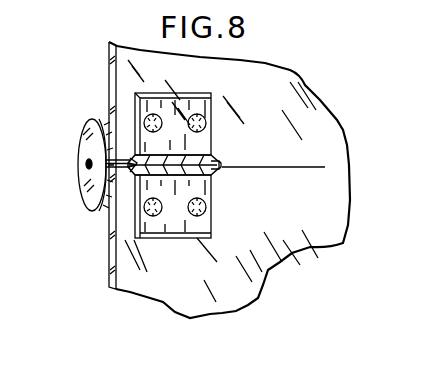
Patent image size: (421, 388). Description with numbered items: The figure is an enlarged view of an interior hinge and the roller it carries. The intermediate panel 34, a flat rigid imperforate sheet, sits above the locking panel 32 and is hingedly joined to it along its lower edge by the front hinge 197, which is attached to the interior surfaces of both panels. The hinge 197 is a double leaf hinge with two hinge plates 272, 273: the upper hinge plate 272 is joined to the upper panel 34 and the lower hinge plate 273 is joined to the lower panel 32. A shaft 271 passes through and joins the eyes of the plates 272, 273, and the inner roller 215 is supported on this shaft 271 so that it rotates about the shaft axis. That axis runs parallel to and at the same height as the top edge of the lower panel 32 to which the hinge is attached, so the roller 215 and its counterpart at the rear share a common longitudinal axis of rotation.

The intermediate panel 34 is at (338, 155).
The locking panel 32 is at (338, 220).
The inner roller 215 is at (83, 128).
The shaft 271 is at (236, 167).
The front hinge 197 is at (205, 181).
The upper hinge plate 272 is at (204, 102).
The lower hinge plate 273 is at (193, 228).